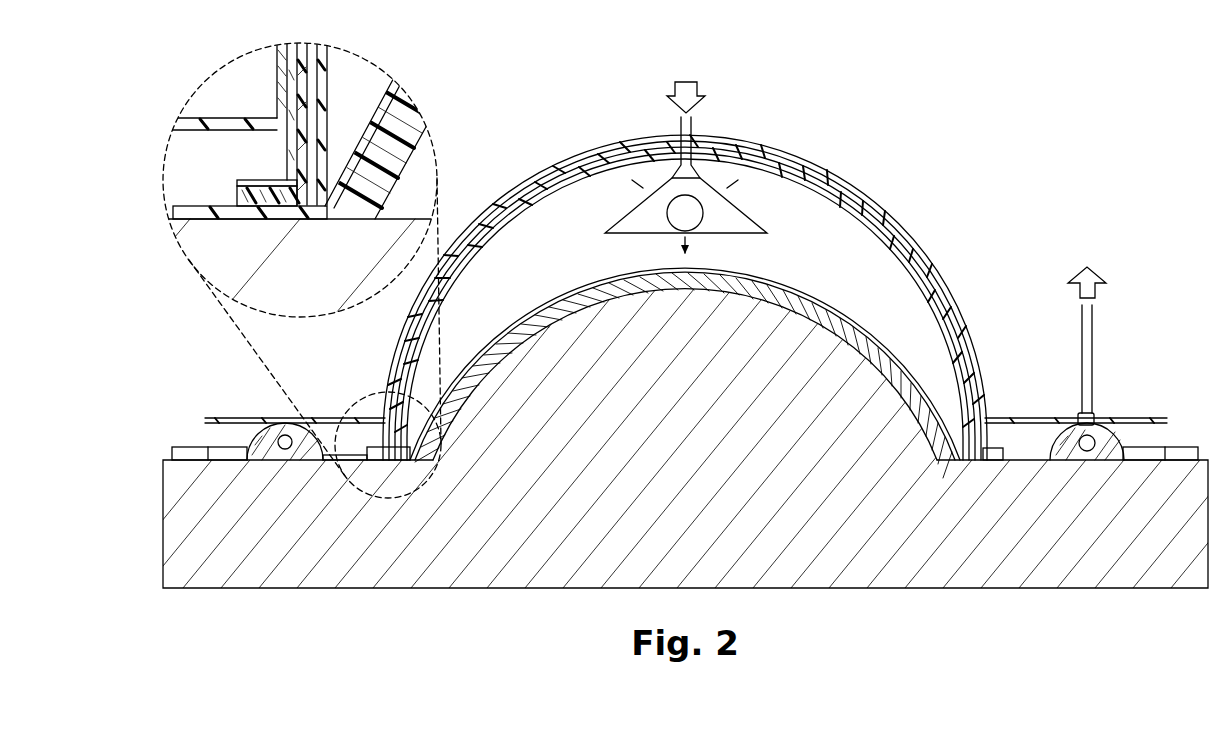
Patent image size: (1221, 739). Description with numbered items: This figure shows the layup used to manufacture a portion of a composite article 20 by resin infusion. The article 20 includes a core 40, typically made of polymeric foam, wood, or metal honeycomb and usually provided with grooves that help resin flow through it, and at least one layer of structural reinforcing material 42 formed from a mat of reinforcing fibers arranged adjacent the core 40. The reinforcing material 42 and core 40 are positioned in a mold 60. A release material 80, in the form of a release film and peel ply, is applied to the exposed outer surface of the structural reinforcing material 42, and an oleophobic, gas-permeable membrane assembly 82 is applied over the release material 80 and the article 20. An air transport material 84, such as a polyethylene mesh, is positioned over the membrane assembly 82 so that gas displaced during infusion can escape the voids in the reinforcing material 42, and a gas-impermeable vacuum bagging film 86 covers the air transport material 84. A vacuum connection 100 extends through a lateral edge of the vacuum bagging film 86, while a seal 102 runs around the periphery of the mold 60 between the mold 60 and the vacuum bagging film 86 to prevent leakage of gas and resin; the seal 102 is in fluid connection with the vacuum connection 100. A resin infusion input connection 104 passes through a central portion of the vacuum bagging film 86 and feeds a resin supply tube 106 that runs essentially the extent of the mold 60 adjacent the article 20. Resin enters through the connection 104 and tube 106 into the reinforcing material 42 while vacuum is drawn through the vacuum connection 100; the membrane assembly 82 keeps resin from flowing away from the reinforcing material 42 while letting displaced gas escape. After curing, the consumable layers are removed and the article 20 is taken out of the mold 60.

The article 20 is at (882, 312).
The core 40 is at (507, 340).
The structural reinforcing material 42 is at (553, 300).
The mold 60 is at (1045, 580).
The release material 80 is at (422, 347).
The membrane assembly 82 is at (387, 438).
The air transport material 84 is at (517, 192).
The vacuum bagging film 86 is at (835, 178).
The vacuum connection 100 is at (1094, 342).
The seal 102 is at (1122, 428).
The resin infusion input connection 104 is at (694, 128).
The resin supply tube 106 is at (748, 216).